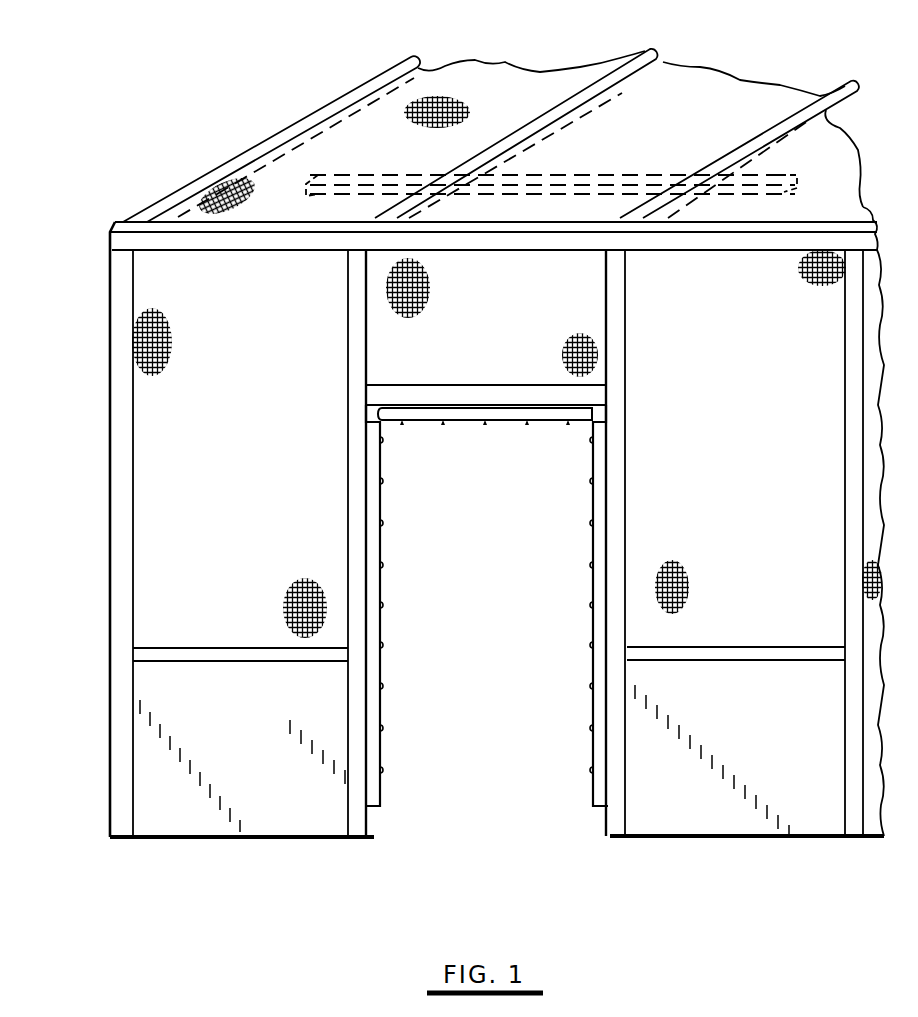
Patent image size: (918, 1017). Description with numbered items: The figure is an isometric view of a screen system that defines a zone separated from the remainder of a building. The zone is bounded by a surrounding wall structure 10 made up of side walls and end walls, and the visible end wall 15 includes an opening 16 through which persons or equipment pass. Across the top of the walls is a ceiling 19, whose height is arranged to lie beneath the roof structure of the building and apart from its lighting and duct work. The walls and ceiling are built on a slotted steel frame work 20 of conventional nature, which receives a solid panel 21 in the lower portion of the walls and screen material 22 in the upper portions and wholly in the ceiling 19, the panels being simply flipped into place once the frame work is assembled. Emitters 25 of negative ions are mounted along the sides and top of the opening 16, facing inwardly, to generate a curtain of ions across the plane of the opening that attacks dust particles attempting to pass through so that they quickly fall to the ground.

The surrounding wall structure 10 is at (110, 742).
The end wall 15 is at (150, 285).
The opening 16 is at (478, 794).
The ceiling 19 is at (296, 113).
The slotted steel frame work 20 is at (413, 55).
The solid panel 21 is at (265, 806).
The screen material 22 is at (272, 170).
The emitter 25 is at (599, 174).